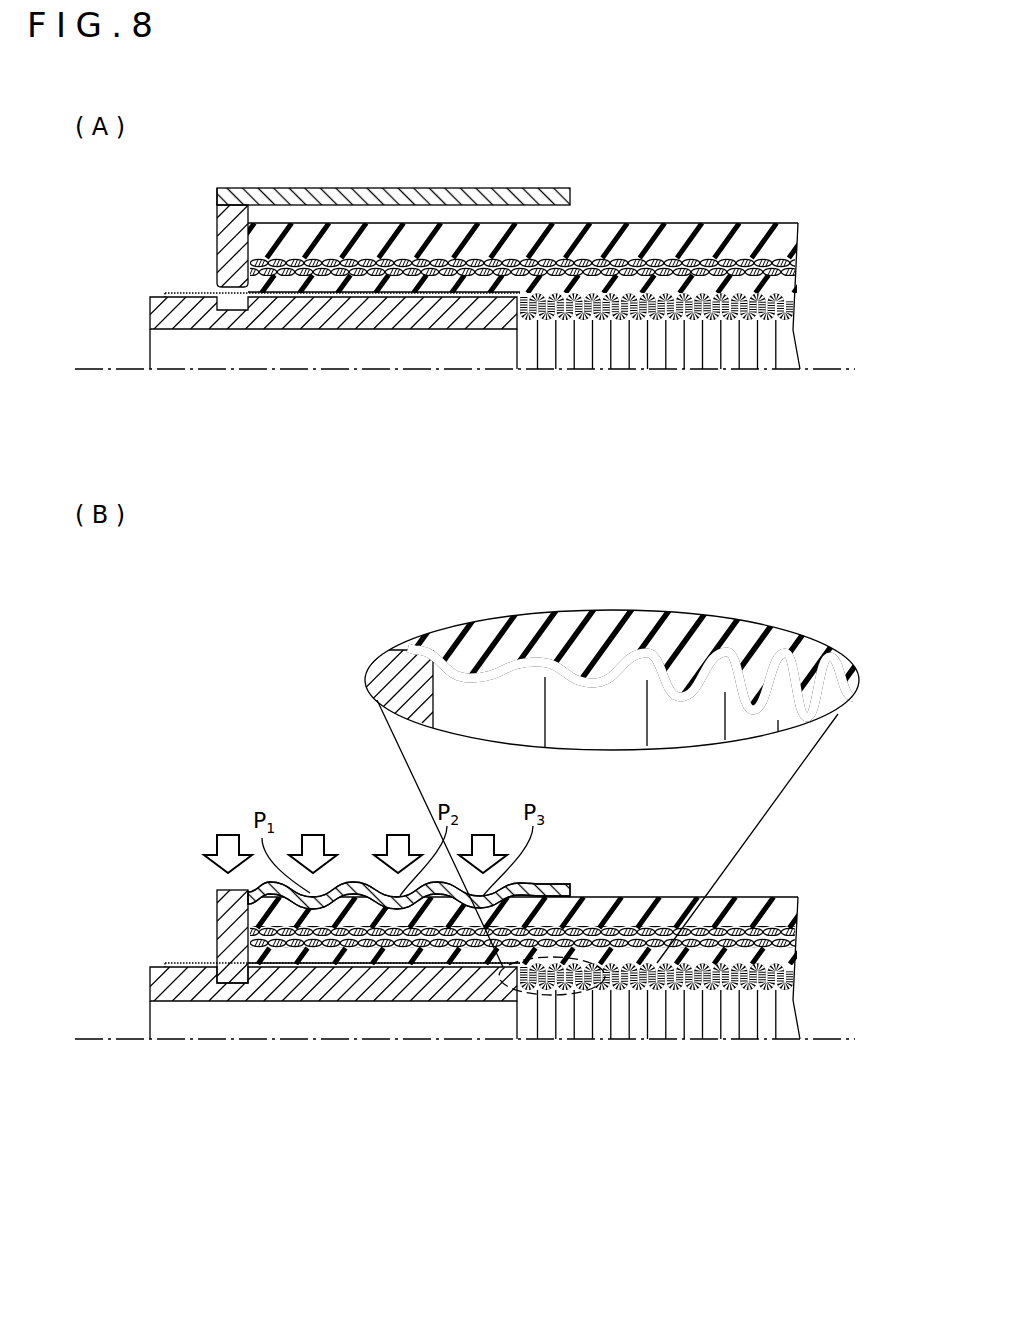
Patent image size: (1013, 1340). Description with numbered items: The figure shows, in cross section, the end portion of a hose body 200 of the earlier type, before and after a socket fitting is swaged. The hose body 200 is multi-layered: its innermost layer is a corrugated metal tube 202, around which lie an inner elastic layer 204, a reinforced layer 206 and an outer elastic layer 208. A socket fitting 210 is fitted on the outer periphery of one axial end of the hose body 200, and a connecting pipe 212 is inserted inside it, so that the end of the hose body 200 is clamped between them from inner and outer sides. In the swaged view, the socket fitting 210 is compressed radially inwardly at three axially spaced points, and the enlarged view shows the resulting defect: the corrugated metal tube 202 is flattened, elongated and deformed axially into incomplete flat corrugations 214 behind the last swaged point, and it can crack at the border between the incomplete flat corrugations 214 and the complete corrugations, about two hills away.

The hose body 200 is at (559, 612).
The corrugated metal tube 202 is at (621, 321).
The inner elastic layer 204 is at (705, 287).
The reinforced layer 206 is at (588, 260).
The outer elastic layer 208 is at (752, 235).
The socket fitting 210 is at (378, 190).
The connecting pipe 212 is at (152, 297).
The incomplete flat corrugations 214 is at (598, 697).